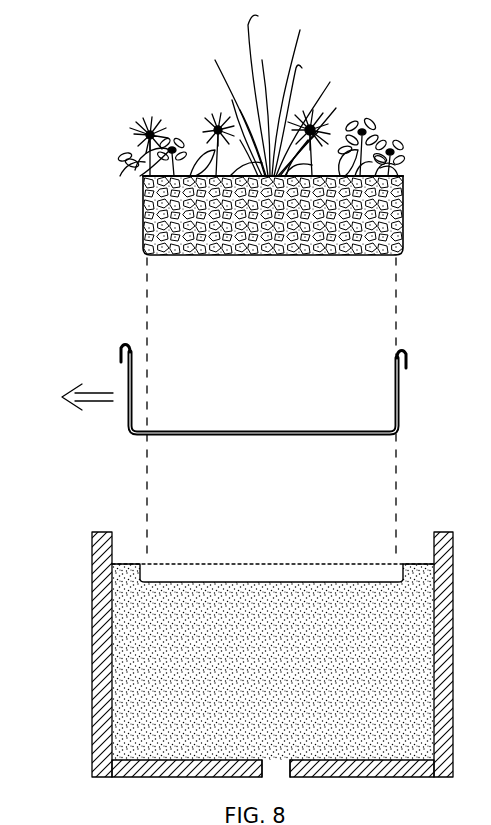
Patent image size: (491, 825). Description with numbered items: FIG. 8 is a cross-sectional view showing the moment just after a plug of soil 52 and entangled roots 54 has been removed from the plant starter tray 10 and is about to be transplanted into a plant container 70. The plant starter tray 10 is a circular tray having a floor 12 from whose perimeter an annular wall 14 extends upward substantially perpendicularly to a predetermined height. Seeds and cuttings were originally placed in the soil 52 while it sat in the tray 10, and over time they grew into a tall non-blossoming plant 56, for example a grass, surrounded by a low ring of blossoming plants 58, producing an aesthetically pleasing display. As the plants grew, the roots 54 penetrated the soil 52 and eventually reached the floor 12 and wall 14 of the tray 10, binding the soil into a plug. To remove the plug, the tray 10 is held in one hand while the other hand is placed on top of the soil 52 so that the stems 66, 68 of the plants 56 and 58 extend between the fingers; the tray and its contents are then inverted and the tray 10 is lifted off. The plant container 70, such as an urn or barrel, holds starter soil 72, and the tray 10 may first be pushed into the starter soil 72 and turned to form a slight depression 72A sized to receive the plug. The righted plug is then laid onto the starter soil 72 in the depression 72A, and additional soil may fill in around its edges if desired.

The plant starter tray 10 is at (406, 402).
The floor 12 is at (272, 430).
The annular wall 14 is at (394, 378).
The soil 52 is at (165, 195).
The roots 54 is at (342, 250).
The non-blossoming plant 56 is at (258, 60).
The blossoming plants 58 is at (337, 111).
The stems 66 is at (145, 163).
The stems 68 is at (138, 135).
The plant container 70 is at (95, 626).
The starter soil 72 is at (128, 700).
The depression 72A is at (308, 575).